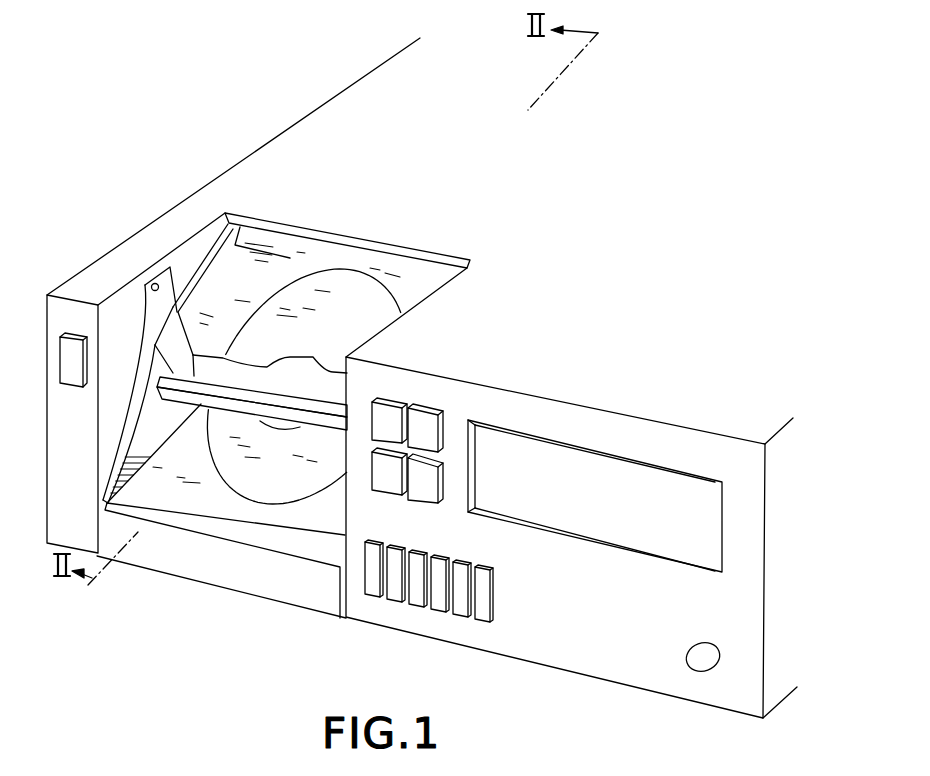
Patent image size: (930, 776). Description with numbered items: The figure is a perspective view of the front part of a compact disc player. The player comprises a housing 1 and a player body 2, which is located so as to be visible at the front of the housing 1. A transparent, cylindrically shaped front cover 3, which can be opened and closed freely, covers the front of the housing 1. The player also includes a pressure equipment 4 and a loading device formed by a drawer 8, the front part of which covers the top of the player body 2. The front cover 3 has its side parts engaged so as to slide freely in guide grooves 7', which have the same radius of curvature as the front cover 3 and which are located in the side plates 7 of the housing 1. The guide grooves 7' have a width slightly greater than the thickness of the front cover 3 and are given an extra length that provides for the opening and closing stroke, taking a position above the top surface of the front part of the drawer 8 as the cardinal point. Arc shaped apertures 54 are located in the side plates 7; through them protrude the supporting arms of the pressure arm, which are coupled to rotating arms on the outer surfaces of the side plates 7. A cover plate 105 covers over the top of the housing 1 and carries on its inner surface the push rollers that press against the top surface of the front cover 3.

The housing 1 is at (778, 460).
The player body 2 is at (343, 268).
The front cover 3 is at (218, 282).
The pressure equipment 4 is at (192, 414).
The side plate 7 is at (136, 383).
The guide groove 7' is at (138, 394).
The drawer 8 is at (240, 578).
The arc shaped aperture 54 is at (156, 276).
The cover plate 105 is at (285, 160).